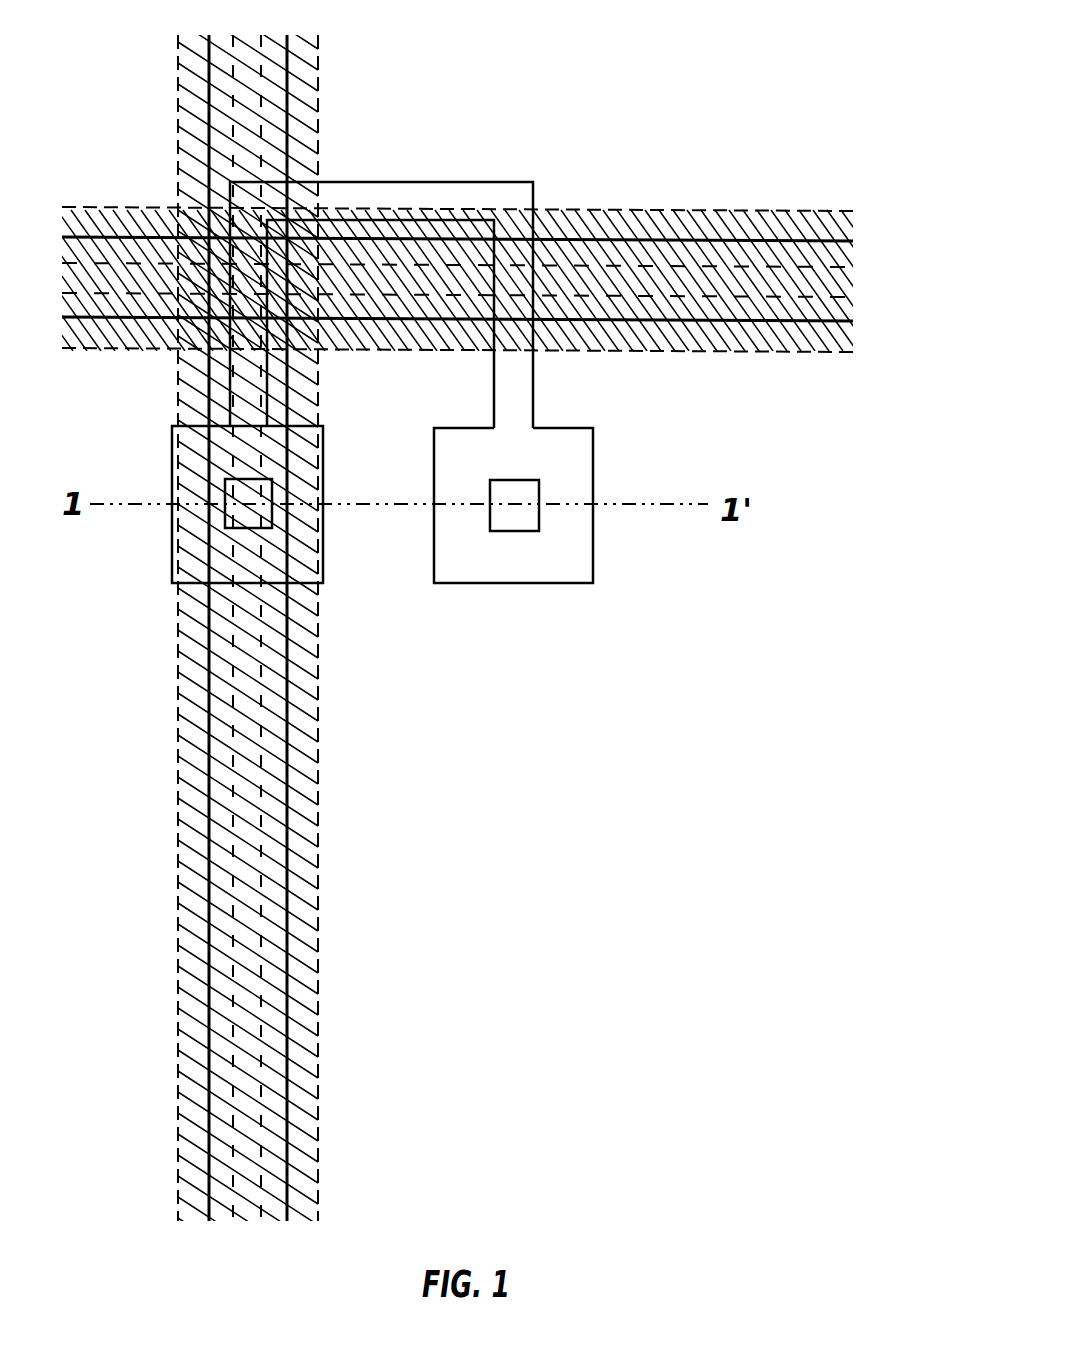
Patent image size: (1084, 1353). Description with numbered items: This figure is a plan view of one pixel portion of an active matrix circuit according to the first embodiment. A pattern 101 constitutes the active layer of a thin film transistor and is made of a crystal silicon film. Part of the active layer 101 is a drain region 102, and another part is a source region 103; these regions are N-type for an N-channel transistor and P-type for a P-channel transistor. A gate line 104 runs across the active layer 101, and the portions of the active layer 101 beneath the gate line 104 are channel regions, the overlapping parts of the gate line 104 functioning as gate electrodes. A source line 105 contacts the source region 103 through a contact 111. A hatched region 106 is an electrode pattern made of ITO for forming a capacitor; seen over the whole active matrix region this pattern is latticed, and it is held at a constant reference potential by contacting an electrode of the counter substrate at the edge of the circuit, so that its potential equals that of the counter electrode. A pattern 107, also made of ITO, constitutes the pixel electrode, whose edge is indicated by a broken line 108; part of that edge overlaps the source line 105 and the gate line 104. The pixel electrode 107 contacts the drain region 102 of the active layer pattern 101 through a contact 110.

The active layer pattern 101 is at (413, 192).
The drain region 102 is at (583, 576).
The source region 103 is at (172, 468).
The gate line 104 is at (660, 240).
The source line 105 is at (288, 110).
The electrode pattern 106 is at (692, 340).
The pixel electrode 107 is at (606, 67).
The broken line 108 is at (260, 867).
The contact 110 is at (502, 498).
The contact 111 is at (232, 515).